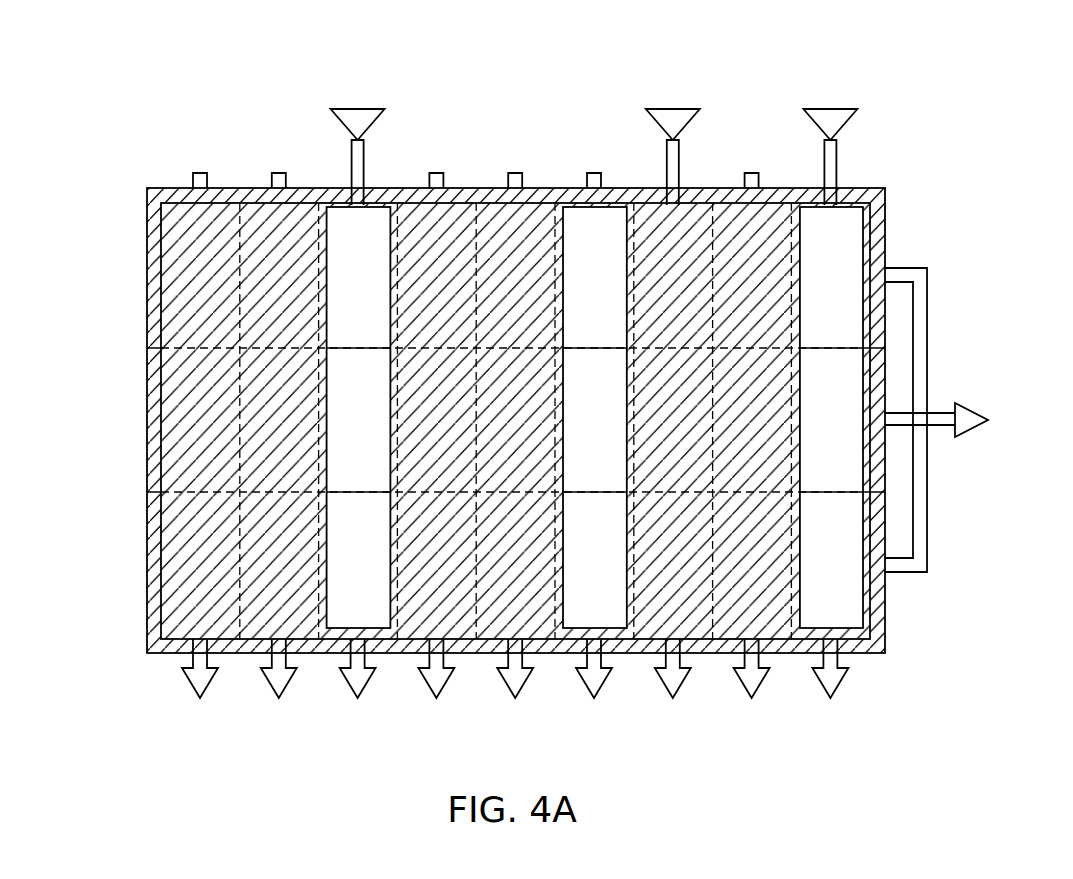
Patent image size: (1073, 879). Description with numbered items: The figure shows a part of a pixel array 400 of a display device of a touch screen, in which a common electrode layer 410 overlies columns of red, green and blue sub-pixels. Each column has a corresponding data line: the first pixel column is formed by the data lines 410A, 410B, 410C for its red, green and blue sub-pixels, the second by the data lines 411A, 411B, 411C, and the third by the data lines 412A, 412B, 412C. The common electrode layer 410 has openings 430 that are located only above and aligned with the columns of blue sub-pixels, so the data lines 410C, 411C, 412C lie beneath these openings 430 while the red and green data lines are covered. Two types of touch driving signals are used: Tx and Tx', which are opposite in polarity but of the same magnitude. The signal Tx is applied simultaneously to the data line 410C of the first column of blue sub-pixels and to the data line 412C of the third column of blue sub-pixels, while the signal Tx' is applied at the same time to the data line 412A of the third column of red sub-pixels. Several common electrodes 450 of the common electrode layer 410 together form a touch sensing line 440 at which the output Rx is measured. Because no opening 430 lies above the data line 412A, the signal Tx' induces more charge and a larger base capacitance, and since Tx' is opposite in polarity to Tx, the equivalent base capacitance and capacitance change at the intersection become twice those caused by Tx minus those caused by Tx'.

The pixel array 400 is at (942, 112).
The common electrode layer 410 is at (483, 196).
The data line of first column of red sub-pixels 410A is at (180, 622).
The data line of first column of green sub-pixels 410B is at (259, 622).
The data line of first column of blue sub-pixels 410C is at (335, 632).
The data line of second column of red sub-pixels 411A is at (416, 622).
The data line of second column of green sub-pixels 411B is at (495, 622).
The data line of second column of blue sub-pixels 411C is at (571, 632).
The data line of third column of red sub-pixels 412A is at (653, 622).
The data line of third column of green sub-pixels 412B is at (732, 622).
The data line of third column of blue sub-pixels 412C is at (807, 632).
The opening 430 is at (373, 198).
The touch sensing line 440 is at (945, 410).
The common electrode 450 is at (153, 272).